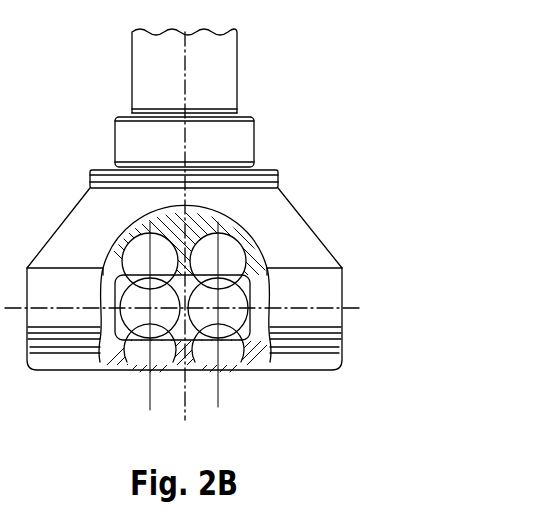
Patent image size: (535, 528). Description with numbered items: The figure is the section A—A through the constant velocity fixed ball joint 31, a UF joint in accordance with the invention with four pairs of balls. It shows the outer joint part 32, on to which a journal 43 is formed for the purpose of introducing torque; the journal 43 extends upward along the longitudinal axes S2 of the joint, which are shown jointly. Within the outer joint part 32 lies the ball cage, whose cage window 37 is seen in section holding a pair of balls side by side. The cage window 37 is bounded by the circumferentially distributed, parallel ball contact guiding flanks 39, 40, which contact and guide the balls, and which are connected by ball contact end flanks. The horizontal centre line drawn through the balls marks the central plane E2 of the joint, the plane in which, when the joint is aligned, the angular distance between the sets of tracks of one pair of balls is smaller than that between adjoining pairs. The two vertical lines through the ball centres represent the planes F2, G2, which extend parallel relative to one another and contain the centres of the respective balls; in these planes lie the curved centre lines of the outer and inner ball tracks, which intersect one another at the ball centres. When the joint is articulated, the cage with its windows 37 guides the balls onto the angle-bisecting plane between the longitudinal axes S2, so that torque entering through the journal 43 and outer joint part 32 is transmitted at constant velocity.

The journal 43 is at (143, 66).
The longitudinal axes S2 is at (185, 60).
The constant velocity fixed ball joint 31 is at (333, 198).
The outer joint part 32 is at (317, 252).
The cage windows 37 is at (192, 283).
The ball contact guiding flank 39 is at (122, 258).
The ball contact guiding flank 40 is at (248, 362).
The plane F2 is at (148, 388).
The plane G2 is at (218, 385).
The central plane E2 is at (355, 310).